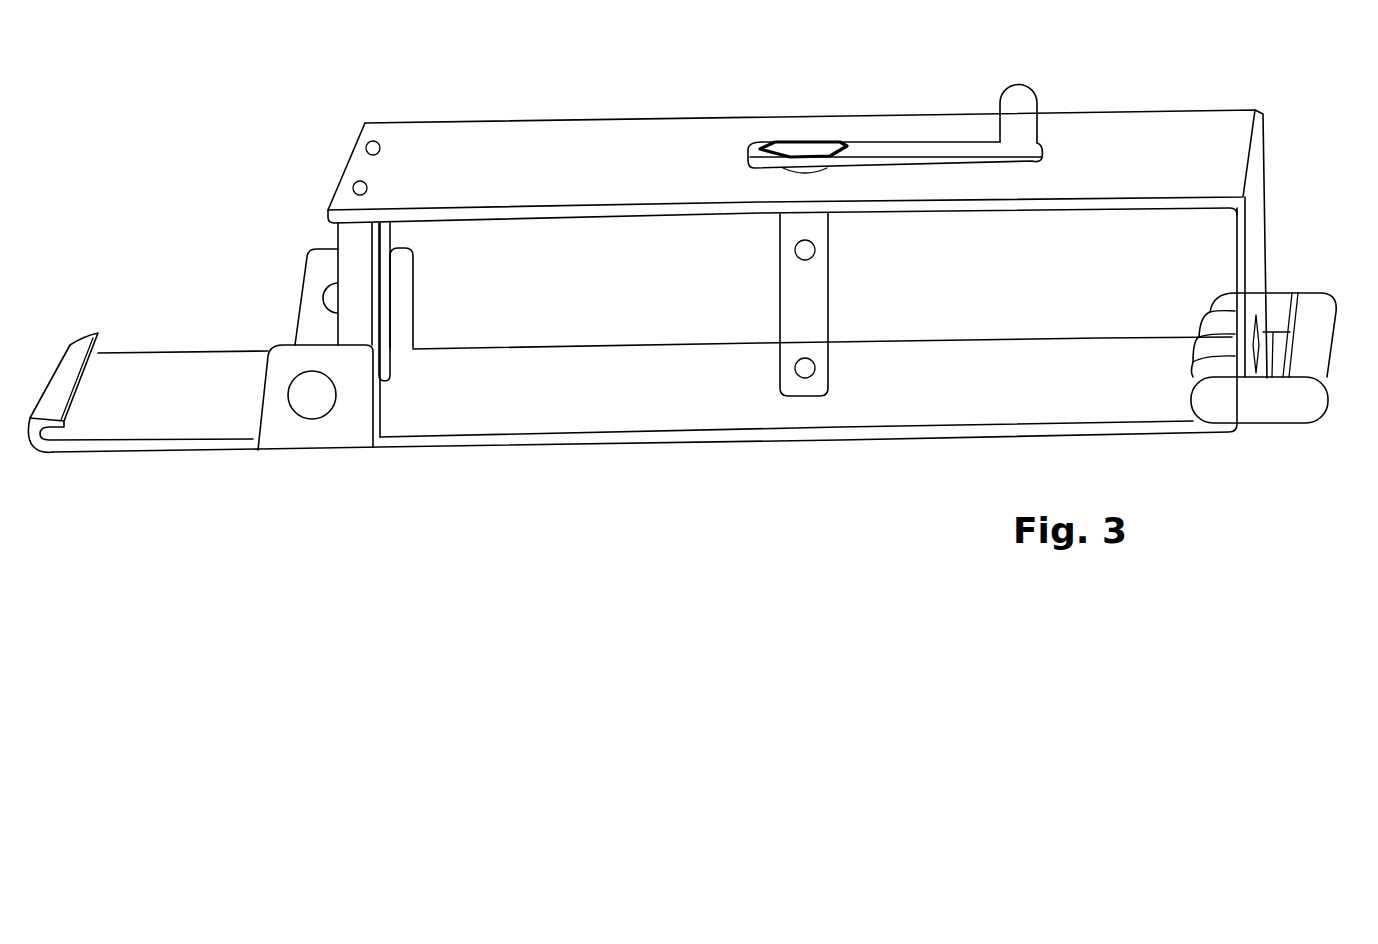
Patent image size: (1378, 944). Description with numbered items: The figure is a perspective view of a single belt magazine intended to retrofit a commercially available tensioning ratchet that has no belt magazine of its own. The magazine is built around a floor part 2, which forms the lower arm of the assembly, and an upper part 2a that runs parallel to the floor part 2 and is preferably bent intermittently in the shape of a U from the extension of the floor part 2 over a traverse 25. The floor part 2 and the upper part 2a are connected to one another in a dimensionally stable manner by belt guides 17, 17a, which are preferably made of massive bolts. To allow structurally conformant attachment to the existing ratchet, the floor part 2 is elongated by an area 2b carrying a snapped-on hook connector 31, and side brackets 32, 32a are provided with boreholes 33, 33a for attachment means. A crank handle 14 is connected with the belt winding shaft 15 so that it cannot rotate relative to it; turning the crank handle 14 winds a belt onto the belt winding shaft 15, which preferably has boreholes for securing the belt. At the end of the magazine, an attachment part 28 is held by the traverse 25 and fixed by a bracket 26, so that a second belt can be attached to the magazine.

The floor part 2 is at (457, 407).
The upper part 2a is at (507, 162).
The area 2b is at (153, 420).
The crank handle 14 is at (875, 148).
The belt winding shaft 15 is at (812, 322).
The belt guide 17 is at (355, 323).
The belt guide 17a is at (383, 273).
The traverse 25 is at (1257, 265).
The bracket 26 is at (1213, 325).
The attachment part 28 is at (1303, 330).
The hook connector 31 is at (75, 357).
The side bracket 32 is at (337, 427).
The side bracket 32a is at (317, 266).
The borehole 33 is at (305, 397).
The borehole 33a is at (328, 299).